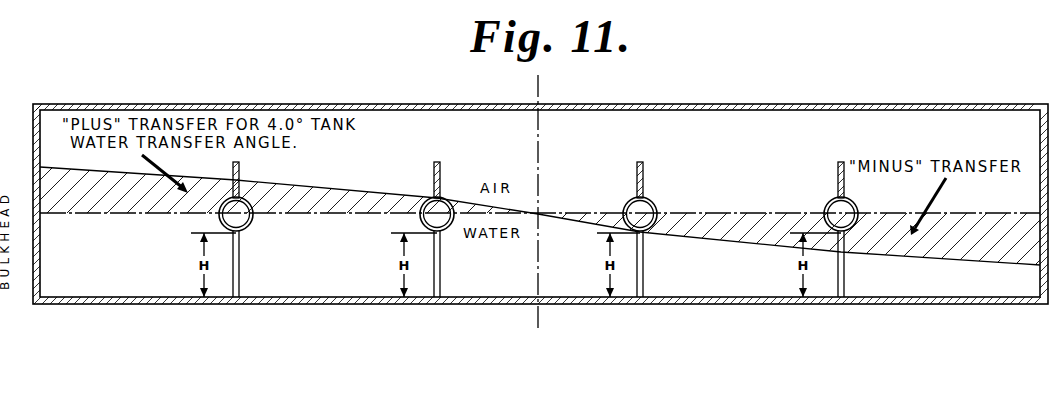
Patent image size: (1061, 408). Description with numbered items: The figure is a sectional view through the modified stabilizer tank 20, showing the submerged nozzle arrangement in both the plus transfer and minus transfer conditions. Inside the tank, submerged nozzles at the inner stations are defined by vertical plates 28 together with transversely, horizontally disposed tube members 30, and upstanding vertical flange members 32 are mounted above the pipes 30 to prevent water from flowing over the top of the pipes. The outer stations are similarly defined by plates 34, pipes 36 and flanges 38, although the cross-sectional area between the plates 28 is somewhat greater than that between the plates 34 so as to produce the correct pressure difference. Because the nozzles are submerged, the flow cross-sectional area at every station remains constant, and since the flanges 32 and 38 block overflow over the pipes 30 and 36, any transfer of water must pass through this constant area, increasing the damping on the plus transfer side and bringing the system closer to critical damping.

The stabilizer tank 20 is at (707, 104).
The vertical plates 28 is at (440, 280).
The tube members 30 is at (448, 227).
The upstanding vertical flange members 32 is at (441, 172).
The plates 34 is at (240, 273).
The pipes 36 is at (249, 226).
The flanges 38 is at (240, 170).